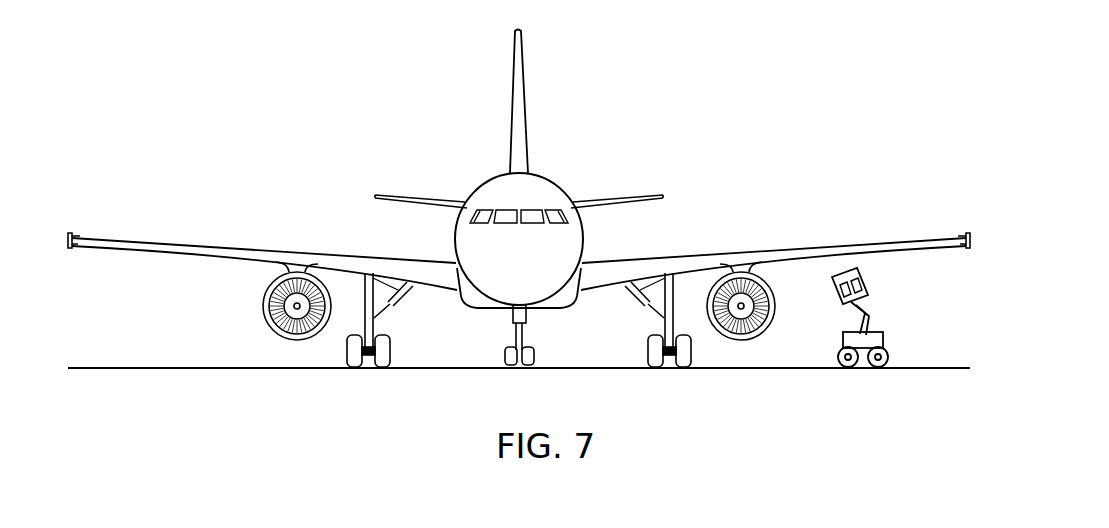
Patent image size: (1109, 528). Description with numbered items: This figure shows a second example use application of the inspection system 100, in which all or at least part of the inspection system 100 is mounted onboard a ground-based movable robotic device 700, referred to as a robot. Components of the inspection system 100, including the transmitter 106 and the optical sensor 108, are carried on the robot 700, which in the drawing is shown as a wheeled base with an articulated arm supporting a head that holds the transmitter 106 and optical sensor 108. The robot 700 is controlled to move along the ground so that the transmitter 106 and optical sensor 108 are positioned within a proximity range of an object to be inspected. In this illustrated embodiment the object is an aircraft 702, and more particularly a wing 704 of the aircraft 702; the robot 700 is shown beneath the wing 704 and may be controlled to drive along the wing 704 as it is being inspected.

The aircraft 702 is at (555, 172).
The wing 704 is at (887, 246).
The inspection system 100 is at (880, 273).
The transmitter 106 is at (833, 292).
The optical sensor 108 is at (866, 283).
The ground-based movable robotic device 700 is at (884, 340).